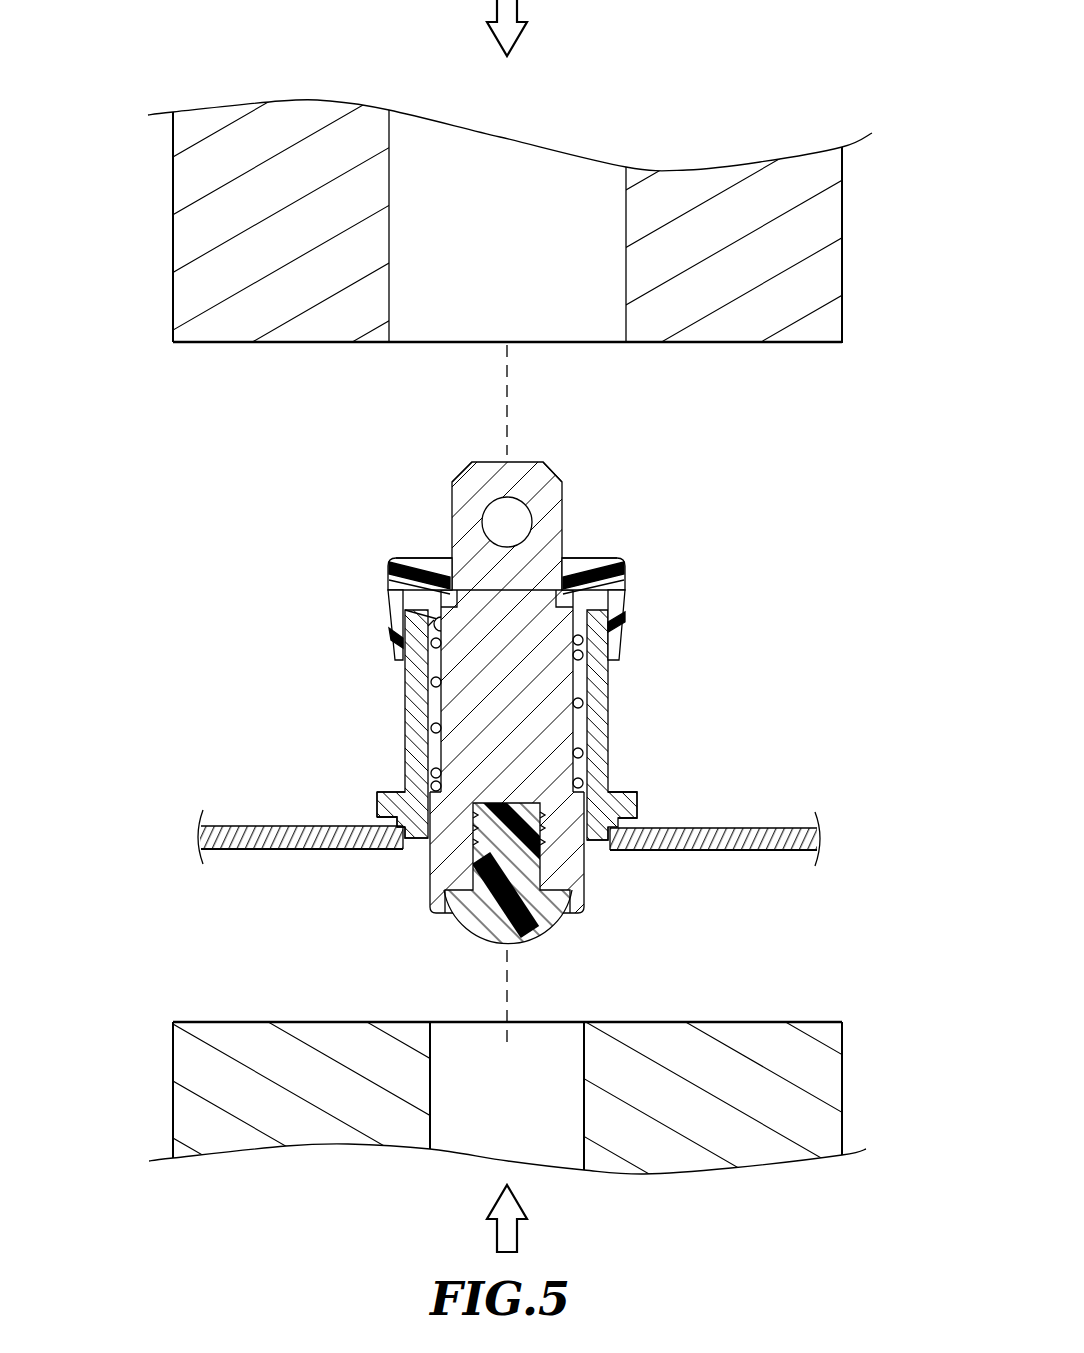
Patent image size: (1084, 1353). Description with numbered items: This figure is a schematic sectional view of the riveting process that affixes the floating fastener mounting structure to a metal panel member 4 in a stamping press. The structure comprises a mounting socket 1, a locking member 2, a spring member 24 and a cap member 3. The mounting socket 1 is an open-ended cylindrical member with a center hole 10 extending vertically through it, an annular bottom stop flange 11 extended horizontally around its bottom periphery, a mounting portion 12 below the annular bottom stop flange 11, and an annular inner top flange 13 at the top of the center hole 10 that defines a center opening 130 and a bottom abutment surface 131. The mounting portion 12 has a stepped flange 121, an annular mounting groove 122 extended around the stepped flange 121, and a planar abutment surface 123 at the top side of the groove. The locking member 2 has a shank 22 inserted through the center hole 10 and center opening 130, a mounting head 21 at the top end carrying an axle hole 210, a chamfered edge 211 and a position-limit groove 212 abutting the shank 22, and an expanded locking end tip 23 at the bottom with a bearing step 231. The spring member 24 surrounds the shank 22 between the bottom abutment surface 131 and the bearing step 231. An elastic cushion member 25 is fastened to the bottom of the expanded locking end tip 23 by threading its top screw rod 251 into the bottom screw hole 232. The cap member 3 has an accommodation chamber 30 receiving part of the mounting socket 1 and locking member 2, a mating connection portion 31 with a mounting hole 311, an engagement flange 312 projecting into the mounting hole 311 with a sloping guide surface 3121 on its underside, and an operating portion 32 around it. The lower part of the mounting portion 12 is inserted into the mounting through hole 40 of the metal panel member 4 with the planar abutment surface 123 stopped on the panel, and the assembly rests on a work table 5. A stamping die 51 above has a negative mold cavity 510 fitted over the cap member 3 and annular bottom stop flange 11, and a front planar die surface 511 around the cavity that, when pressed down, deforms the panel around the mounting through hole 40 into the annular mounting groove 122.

The mounting socket 1 is at (458, 717).
The center hole 10 is at (426, 712).
The annular bottom stop flange 11 is at (628, 806).
The mounting portion 12 is at (314, 773).
The stepped flange 121 is at (383, 806).
The annular mounting groove 122 is at (405, 832).
The planar abutment surface 123 is at (384, 825).
The annular inner top flange 13 is at (400, 608).
The center opening 130 is at (435, 633).
The bottom abutment surface 131 is at (438, 627).
The locking member 2 is at (523, 676).
The mounting head 21 is at (534, 467).
The axle hole 210 is at (516, 511).
The chamfered edge 211 is at (566, 480).
The position-limit groove 212 is at (598, 597).
The shank 22 is at (553, 723).
The expanded locking end tip 23 is at (497, 880).
The bearing step 231 is at (581, 787).
The bottom screw hole 232 is at (460, 884).
The spring member 24 is at (581, 704).
The elastic cushion member 25 is at (527, 880).
The top screw rod 251 is at (560, 905).
The cap member 3 is at (575, 594).
The accommodation chamber 30 is at (618, 622).
The mating connection portion 31 is at (575, 561).
The mounting hole 311 is at (582, 561).
The engagement flange 312 is at (623, 590).
The sloping guide surface 3121 is at (624, 594).
The operating portion 32 is at (622, 655).
The metal panel member 4 is at (741, 838).
The mounting through hole 40 is at (612, 845).
The work table 5 is at (234, 1036).
The stamping die 51 is at (187, 223).
The negative mold cavity 510 is at (389, 275).
The front planar die surface 511 is at (653, 343).